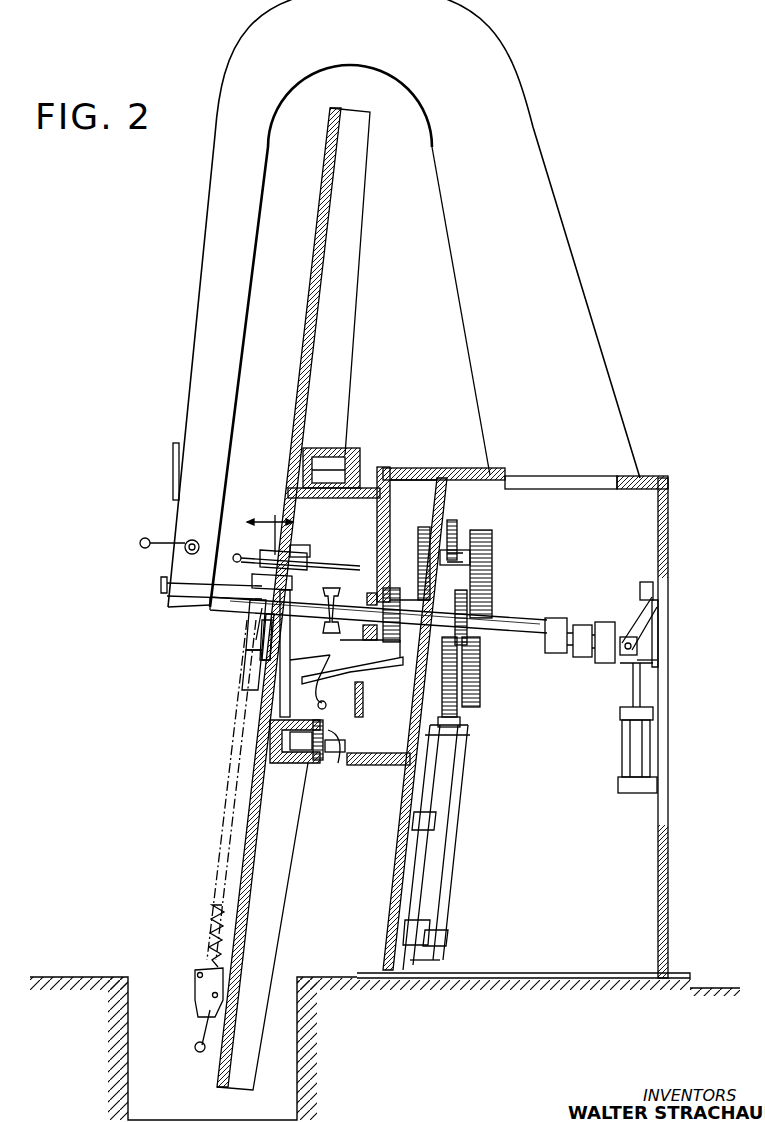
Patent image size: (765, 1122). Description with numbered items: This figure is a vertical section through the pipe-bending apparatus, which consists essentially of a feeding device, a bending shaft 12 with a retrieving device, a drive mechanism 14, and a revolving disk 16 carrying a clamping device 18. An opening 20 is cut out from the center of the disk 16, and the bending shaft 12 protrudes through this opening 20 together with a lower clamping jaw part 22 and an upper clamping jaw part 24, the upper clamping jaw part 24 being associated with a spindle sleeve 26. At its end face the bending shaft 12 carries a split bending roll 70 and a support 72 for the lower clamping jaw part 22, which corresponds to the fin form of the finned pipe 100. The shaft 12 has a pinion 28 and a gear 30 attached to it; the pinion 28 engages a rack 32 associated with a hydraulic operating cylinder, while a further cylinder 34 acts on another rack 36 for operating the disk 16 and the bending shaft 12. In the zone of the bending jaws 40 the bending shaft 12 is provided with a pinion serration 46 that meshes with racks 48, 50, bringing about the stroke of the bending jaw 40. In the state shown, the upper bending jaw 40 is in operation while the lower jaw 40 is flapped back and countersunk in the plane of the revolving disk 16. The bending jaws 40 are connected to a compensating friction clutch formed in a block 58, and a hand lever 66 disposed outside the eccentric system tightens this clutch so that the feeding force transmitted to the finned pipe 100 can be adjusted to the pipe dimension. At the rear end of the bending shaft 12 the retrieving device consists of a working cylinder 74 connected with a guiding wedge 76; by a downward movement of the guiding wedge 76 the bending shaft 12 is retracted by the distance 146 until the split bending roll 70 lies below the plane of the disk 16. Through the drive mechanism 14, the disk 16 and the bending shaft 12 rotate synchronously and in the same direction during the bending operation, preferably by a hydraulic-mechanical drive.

The bending shaft 12 is at (312, 600).
The drive mechanism 14 is at (449, 530).
The revolving disk 16 is at (347, 200).
The clamping device 18 is at (195, 985).
The opening 20 is at (282, 489).
The lower clamping jaw part 22 is at (270, 652).
The upper clamping jaw part 24 is at (262, 640).
The spindle sleeve 26 is at (236, 596).
The pinion 28 is at (455, 600).
The gear 30 is at (393, 567).
The rack 32 is at (470, 690).
The cylinder 34 is at (443, 892).
The rack 36 is at (482, 659).
The bending jaw 40 is at (262, 590).
The pinion serration 46 is at (327, 622).
The rack 48 is at (326, 588).
The rack 50 is at (337, 752).
The block 58 is at (262, 556).
The hand lever 66 is at (236, 554).
The split bending roll 70 is at (255, 606).
The support 72 is at (280, 640).
The working cylinder 74 is at (622, 749).
The guiding wedge 76 is at (645, 633).
The finned pipe 100 is at (250, 598).
The retraction distance 146 is at (278, 522).